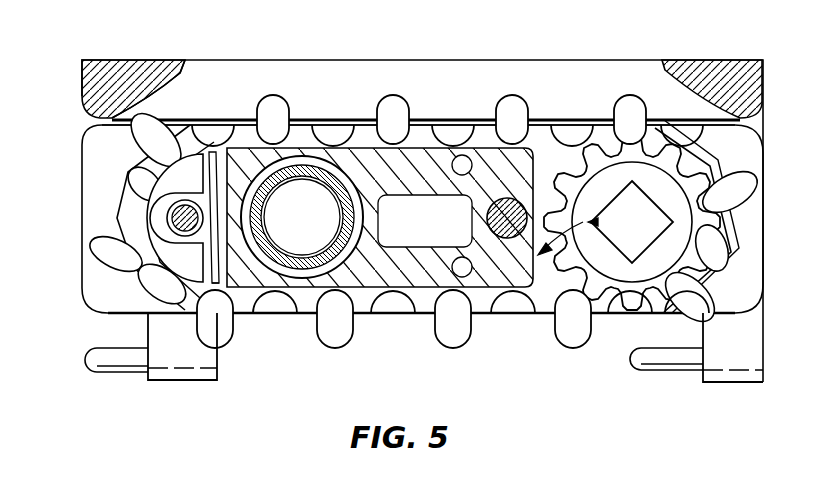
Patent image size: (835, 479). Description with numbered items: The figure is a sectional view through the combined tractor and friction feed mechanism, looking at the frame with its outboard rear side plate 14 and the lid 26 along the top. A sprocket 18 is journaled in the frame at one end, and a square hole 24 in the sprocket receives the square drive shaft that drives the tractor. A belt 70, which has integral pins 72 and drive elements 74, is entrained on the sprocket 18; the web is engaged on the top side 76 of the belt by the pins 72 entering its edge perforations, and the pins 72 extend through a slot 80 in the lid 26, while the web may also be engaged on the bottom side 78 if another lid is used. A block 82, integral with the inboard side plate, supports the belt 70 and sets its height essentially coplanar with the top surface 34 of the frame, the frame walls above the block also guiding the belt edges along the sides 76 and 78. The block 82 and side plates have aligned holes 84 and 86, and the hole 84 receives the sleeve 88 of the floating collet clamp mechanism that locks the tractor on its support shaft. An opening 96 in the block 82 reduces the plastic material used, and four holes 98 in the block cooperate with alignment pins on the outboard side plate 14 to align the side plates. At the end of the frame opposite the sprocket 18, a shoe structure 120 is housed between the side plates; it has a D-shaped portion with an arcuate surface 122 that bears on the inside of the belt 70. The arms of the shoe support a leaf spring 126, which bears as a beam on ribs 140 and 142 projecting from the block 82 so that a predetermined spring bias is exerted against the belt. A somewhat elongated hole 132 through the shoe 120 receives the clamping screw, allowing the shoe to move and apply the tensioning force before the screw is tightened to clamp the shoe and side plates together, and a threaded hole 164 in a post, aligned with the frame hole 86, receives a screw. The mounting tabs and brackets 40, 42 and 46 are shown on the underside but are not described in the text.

The outboard rear side plate 14 is at (82, 258).
The sprocket 18 is at (694, 268).
The square hole 24 is at (706, 168).
The lid 26 is at (116, 60).
The top surface of the frame 34 is at (668, 118).
The left mounting tab 40 is at (118, 364).
The right mounting tab 42 is at (642, 370).
The mounting bracket 46 is at (222, 368).
The belt 70 is at (464, 130).
The pins 72 is at (273, 95).
The drive elements 74 is at (339, 132).
The top side of the belt 76 is at (428, 118).
The bottom side of the belt 78 is at (425, 318).
The slot 80 is at (190, 60).
The block 82 is at (648, 236).
The hole 84 is at (288, 303).
The hole 86 is at (527, 207).
The sleeve 88 is at (300, 148).
The opening 96 is at (380, 196).
The holes 98 is at (270, 196).
The shoe structure 120 is at (142, 170).
The arcuate surface 122 is at (135, 273).
The leaf spring 126 is at (197, 314).
The hole 132 is at (177, 218).
The rib 140 is at (247, 134).
The rib 142 is at (234, 300).
The hole 164 is at (190, 196).